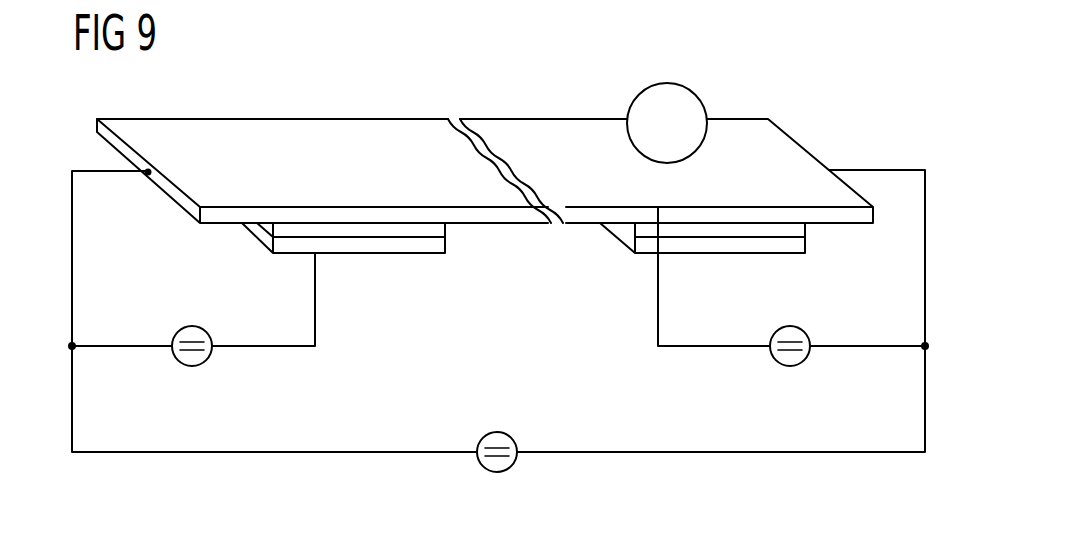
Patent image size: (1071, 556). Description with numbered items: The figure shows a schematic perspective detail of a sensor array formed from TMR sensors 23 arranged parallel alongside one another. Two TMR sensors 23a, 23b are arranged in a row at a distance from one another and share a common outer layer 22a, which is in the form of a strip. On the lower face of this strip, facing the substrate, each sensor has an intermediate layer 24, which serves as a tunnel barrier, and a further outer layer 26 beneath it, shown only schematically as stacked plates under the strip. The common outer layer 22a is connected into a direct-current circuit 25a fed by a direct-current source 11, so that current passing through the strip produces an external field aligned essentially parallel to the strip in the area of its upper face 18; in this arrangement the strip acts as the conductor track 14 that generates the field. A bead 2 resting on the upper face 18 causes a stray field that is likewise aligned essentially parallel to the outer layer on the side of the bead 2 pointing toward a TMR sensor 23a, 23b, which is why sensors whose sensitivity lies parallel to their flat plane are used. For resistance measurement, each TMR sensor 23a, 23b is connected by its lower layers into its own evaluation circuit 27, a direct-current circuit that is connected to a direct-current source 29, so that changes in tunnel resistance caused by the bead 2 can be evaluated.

The bead 2 is at (693, 112).
The direct-current source 11 is at (497, 473).
The conductor track 14 is at (324, 137).
The upper face 18 is at (590, 133).
The common outer layer 22a is at (290, 128).
The TMR sensors 23 is at (681, 142).
The TMR sensor 23a is at (427, 268).
The TMR sensor 23b is at (702, 283).
The intermediate layer 24 is at (523, 283).
The direct-current circuit 25a is at (642, 455).
The outer layer 26 is at (523, 283).
The evaluation circuit 27 is at (128, 345).
The direct-current source 29 is at (192, 367).